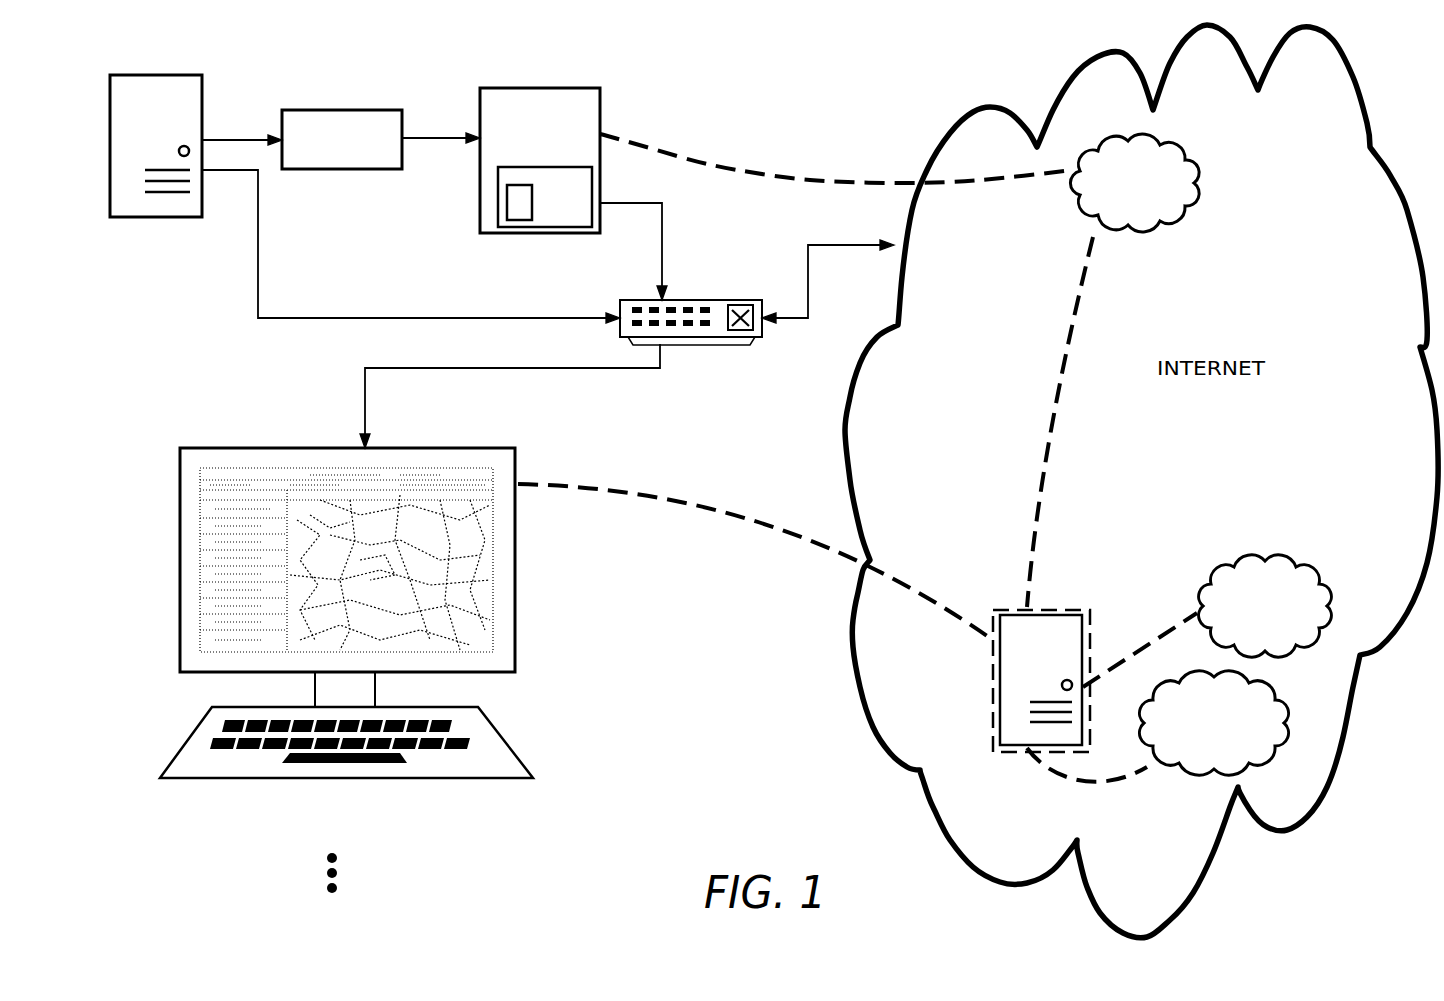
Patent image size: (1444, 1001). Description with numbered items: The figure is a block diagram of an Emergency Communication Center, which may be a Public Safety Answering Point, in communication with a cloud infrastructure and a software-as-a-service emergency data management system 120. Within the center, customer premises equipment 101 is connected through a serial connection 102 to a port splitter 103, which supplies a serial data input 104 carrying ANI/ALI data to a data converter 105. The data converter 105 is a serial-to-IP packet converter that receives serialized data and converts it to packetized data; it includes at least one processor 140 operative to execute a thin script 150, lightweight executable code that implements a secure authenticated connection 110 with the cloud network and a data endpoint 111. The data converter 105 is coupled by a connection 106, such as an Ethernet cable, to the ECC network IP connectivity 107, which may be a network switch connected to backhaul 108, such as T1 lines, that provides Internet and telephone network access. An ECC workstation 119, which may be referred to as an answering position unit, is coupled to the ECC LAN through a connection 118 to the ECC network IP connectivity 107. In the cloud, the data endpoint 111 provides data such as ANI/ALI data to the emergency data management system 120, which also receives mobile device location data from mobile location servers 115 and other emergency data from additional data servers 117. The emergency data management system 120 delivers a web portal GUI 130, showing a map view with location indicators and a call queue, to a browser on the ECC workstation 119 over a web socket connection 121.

The customer premises equipment 101 is at (203, 85).
The serial connection 102 is at (215, 137).
The port splitter 103 is at (377, 108).
The serial data input 104 is at (420, 140).
The data converter 105 is at (583, 88).
The connection 106 is at (663, 248).
The ECC network IP connectivity 107 is at (690, 298).
The backhaul 108 is at (808, 275).
The secure authenticated connection 110 is at (757, 170).
The data endpoint 111 is at (1190, 143).
The mobile location servers 115 is at (1240, 562).
The additional data servers 117 is at (1283, 692).
The connection 118 is at (580, 370).
The ECC workstation 119 is at (462, 448).
The emergency data management system 120 is at (1050, 615).
The web socket connection 121 is at (742, 510).
The web portal GUI 130 is at (415, 568).
The processor 140 is at (497, 184).
The thin script 150 is at (515, 214).